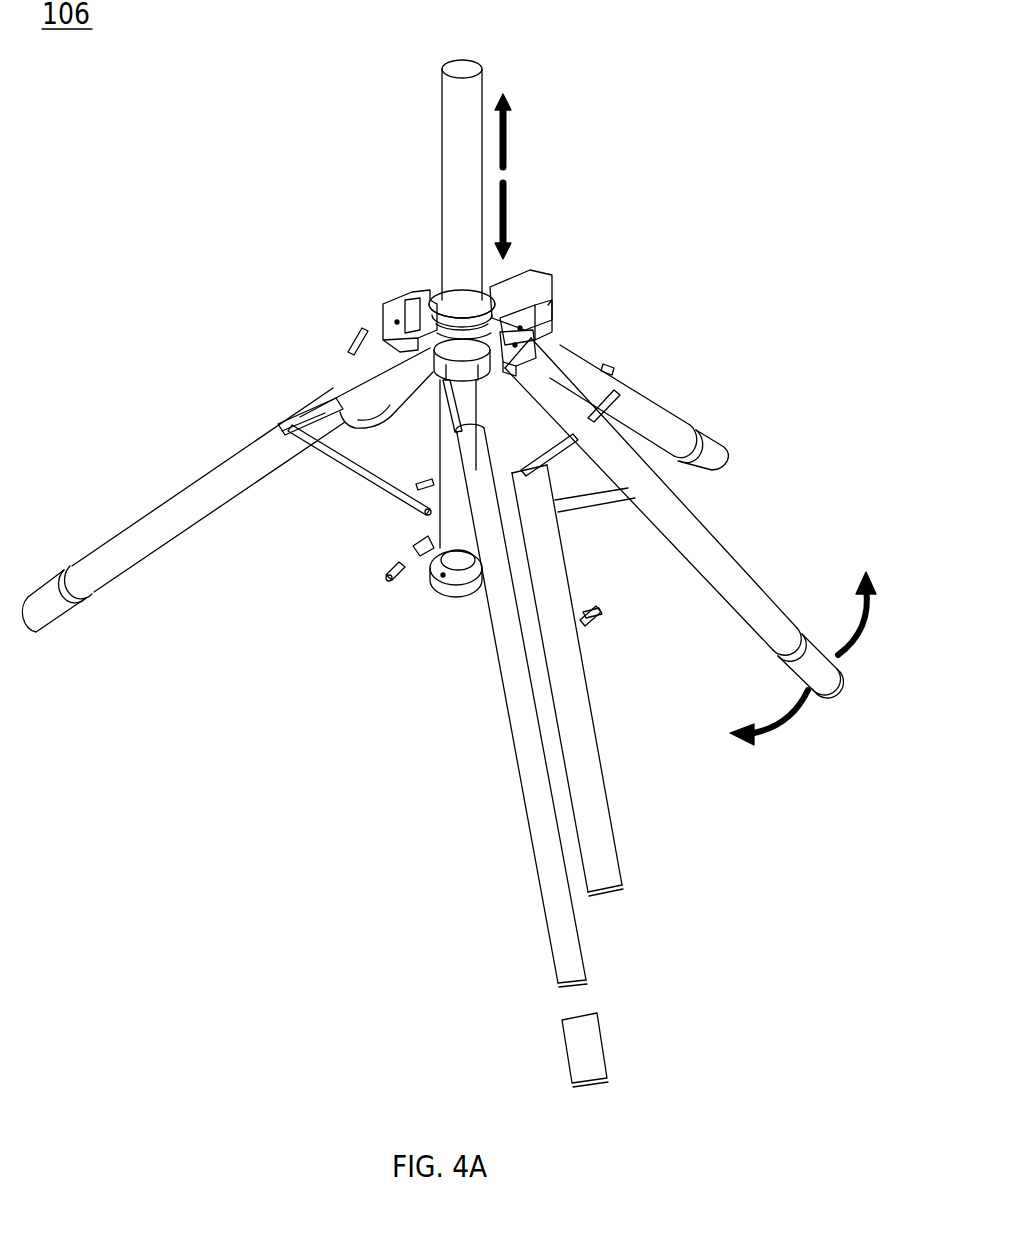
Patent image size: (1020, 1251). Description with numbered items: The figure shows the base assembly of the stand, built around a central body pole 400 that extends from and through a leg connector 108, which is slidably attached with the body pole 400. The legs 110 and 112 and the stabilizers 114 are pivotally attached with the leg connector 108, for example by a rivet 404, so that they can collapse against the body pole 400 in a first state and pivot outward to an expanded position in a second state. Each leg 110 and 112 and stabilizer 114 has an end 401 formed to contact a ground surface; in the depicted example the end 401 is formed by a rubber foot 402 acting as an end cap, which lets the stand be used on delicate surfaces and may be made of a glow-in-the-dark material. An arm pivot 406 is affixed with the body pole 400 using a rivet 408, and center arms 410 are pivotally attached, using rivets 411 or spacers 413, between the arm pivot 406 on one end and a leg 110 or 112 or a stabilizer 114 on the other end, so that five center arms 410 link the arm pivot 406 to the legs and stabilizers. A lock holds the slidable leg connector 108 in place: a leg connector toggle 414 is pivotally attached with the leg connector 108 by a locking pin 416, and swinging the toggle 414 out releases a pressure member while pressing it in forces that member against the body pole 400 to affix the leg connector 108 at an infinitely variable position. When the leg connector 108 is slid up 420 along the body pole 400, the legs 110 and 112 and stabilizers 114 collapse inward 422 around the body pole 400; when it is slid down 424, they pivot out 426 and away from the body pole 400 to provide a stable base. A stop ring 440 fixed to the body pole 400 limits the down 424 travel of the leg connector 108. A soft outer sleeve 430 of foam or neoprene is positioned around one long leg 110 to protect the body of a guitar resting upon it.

The body pole 400 is at (492, 75).
The slid up 420 is at (512, 137).
The slid down 424 is at (512, 207).
The leg connector 108 is at (507, 291).
The stop ring 440 is at (447, 330).
The rivet 404 is at (352, 333).
The leg 112 is at (575, 347).
The end 401 is at (732, 467).
The rivet 411 is at (616, 372).
The locking pin 416 is at (330, 402).
The leg connector toggle 414 is at (280, 429).
The leg 110 is at (508, 727).
The stabilizer 114 is at (762, 596).
The center arm 410 is at (365, 491).
The outer sleeve 430 is at (622, 845).
The arm pivot 406 is at (446, 594).
The rivet 408 is at (384, 579).
The spacer 413 is at (593, 626).
The rubber foot 402 is at (600, 1013).
The pivot out 426 is at (851, 655).
The collapse inward 422 is at (748, 748).